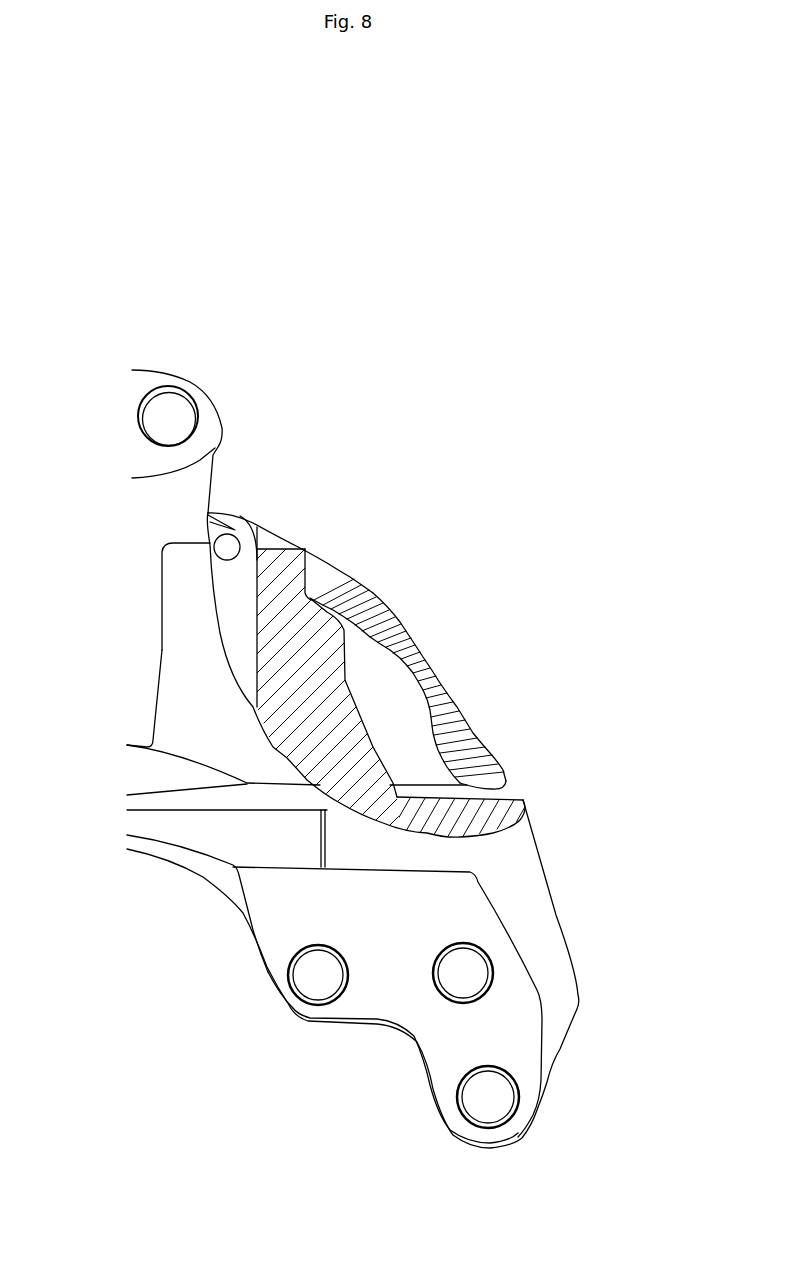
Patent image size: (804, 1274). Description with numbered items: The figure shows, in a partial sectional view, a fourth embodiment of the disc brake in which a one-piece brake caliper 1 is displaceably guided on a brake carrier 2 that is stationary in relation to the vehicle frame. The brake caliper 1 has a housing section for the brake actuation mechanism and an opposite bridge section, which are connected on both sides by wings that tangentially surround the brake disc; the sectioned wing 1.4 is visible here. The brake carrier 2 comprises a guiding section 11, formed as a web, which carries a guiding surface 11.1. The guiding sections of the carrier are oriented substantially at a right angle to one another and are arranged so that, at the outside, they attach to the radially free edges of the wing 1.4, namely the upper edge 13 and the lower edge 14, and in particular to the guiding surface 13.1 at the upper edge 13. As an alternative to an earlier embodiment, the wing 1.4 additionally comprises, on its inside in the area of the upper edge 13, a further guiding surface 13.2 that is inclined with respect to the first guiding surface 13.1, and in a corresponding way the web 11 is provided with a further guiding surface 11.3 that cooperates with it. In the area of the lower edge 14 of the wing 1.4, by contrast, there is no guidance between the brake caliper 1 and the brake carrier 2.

The brake caliper 1 is at (151, 383).
The brake carrier 2 is at (493, 1050).
The guiding section 11 is at (284, 580).
The guiding surface 11.1 is at (300, 583).
The further guiding surface 11.3 is at (318, 604).
The upper edge 13 is at (308, 592).
The guiding surface 13.1 is at (315, 562).
The further guiding surface 13.2 is at (323, 580).
The wing 1.4 is at (440, 668).
The lower edge 14 is at (487, 780).